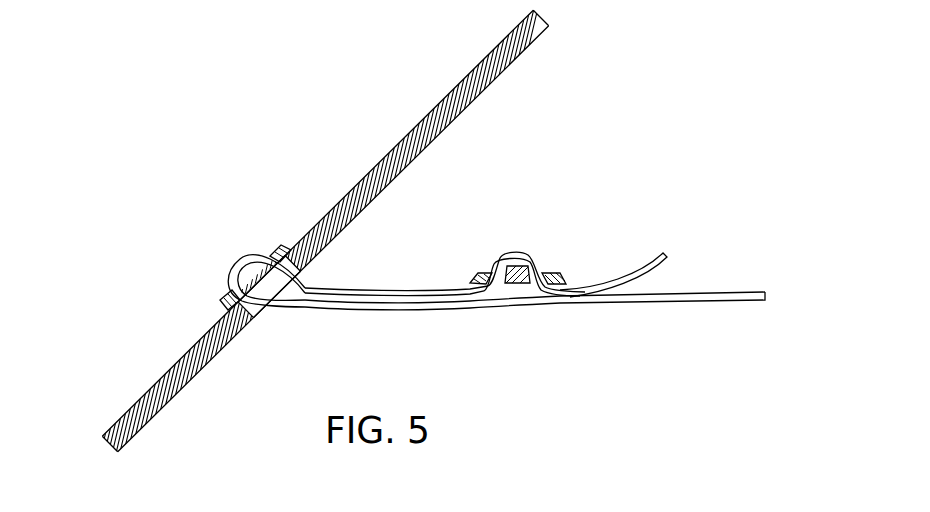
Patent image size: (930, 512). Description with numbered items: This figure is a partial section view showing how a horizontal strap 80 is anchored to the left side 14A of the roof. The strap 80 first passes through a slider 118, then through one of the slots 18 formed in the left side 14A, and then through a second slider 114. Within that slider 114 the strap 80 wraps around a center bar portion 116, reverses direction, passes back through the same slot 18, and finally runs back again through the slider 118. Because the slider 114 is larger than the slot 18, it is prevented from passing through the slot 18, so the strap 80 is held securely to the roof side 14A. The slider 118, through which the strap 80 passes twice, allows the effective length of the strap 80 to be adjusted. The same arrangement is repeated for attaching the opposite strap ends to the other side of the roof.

The left side 14A is at (398, 144).
The slot 18 is at (257, 310).
The horizontal strap 80 is at (685, 298).
The slider 114 is at (273, 248).
The center bar portion 116 is at (233, 262).
The slider 118 is at (555, 273).